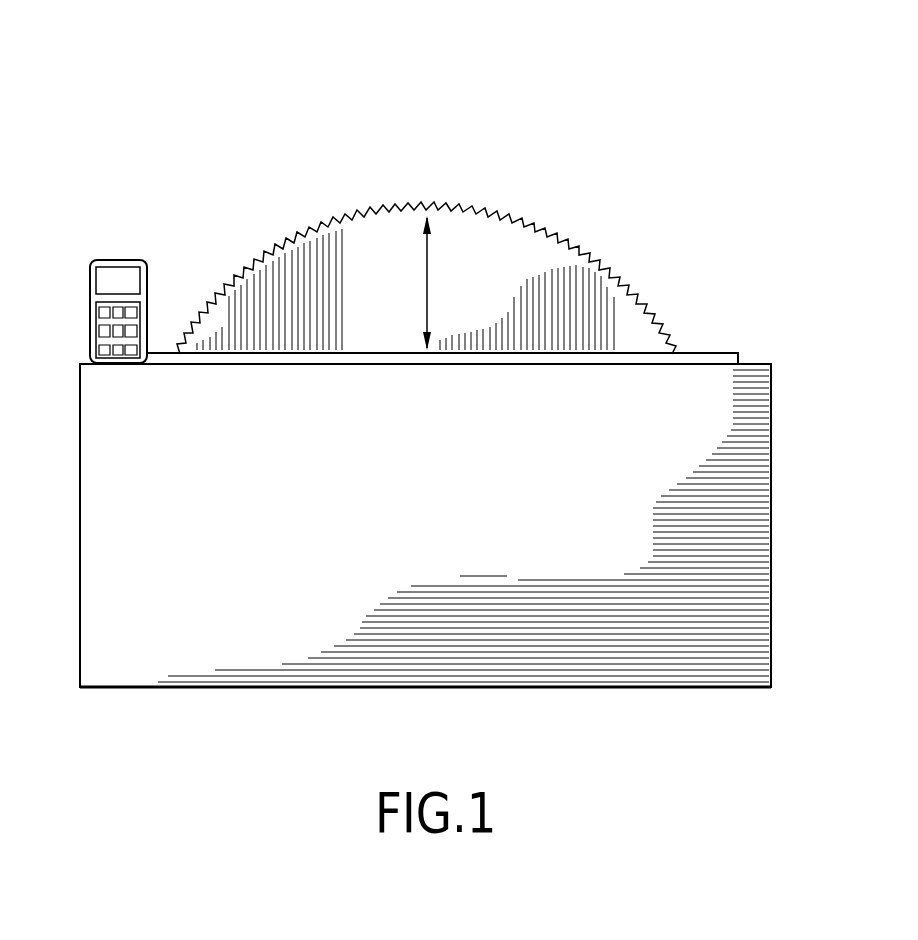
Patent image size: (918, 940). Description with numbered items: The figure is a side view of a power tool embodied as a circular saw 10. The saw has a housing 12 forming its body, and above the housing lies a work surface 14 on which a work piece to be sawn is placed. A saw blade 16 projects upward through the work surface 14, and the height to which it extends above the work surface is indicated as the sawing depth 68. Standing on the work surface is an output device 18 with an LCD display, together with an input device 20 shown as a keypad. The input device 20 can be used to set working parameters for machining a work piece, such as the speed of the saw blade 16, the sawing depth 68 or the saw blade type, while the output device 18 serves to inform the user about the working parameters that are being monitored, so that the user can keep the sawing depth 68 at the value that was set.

The circular saw 10 is at (658, 152).
The housing 12 is at (772, 392).
The work surface 14 is at (700, 352).
The saw blade 16 is at (347, 224).
The output device 18 is at (118, 277).
The input device 20 is at (118, 338).
The sawing depth 68 is at (427, 265).